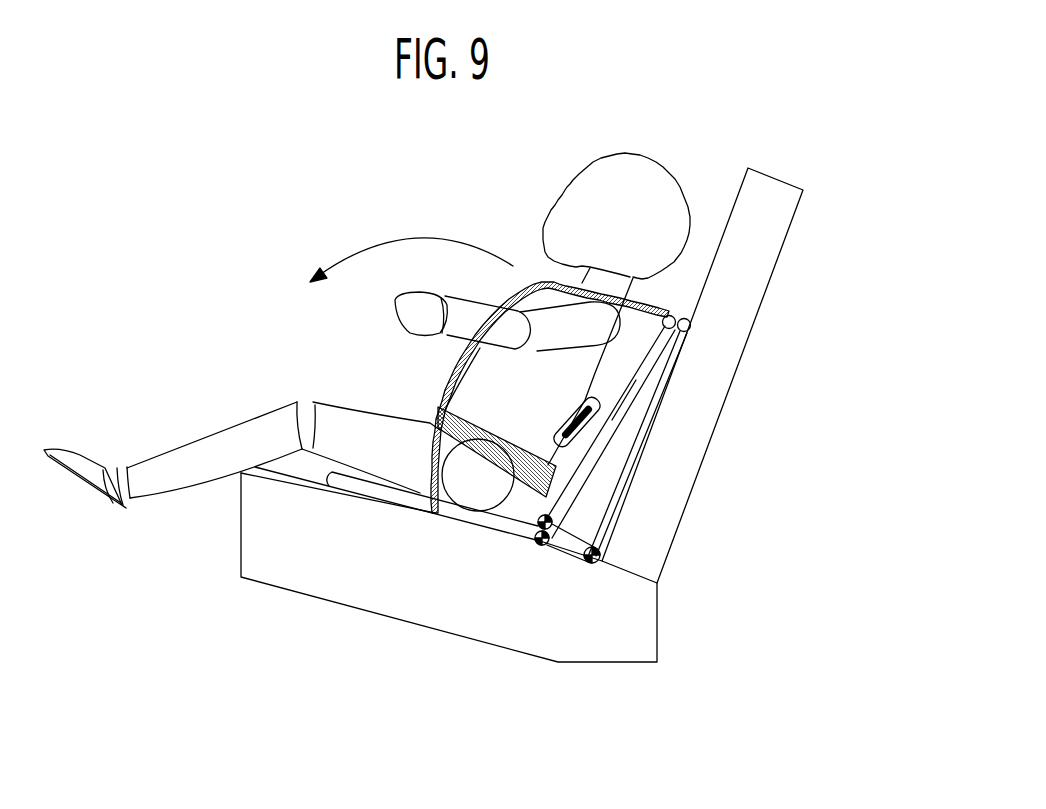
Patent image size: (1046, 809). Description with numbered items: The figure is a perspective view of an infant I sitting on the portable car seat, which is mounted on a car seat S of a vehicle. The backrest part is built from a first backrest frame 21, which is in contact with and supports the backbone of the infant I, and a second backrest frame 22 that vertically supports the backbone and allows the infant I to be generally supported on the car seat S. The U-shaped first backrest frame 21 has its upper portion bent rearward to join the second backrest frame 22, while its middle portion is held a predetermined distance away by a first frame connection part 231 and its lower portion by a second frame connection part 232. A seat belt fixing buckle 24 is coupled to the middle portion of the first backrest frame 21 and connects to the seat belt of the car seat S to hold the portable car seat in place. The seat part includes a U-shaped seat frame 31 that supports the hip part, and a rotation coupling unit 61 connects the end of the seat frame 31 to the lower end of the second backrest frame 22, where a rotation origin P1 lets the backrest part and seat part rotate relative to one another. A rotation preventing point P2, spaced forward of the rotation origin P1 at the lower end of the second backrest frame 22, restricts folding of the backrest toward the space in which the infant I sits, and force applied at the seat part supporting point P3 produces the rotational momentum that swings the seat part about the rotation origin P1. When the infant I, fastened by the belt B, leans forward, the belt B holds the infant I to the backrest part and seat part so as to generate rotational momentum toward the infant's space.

The infant I is at (645, 172).
The car seat S is at (777, 235).
The belt B is at (398, 373).
The first backrest frame 21 is at (653, 338).
The second backrest frame 22 is at (663, 368).
The seat belt fixing buckle 24 is at (588, 422).
The first frame connection part 231 is at (610, 445).
The second frame connection part 232 is at (567, 532).
The rotation coupling unit 61 is at (607, 553).
The seat frame 31 is at (372, 490).
The rotation origin P1 is at (657, 608).
The rotation preventing point P2 is at (538, 562).
The seat part supporting point P3 is at (330, 500).